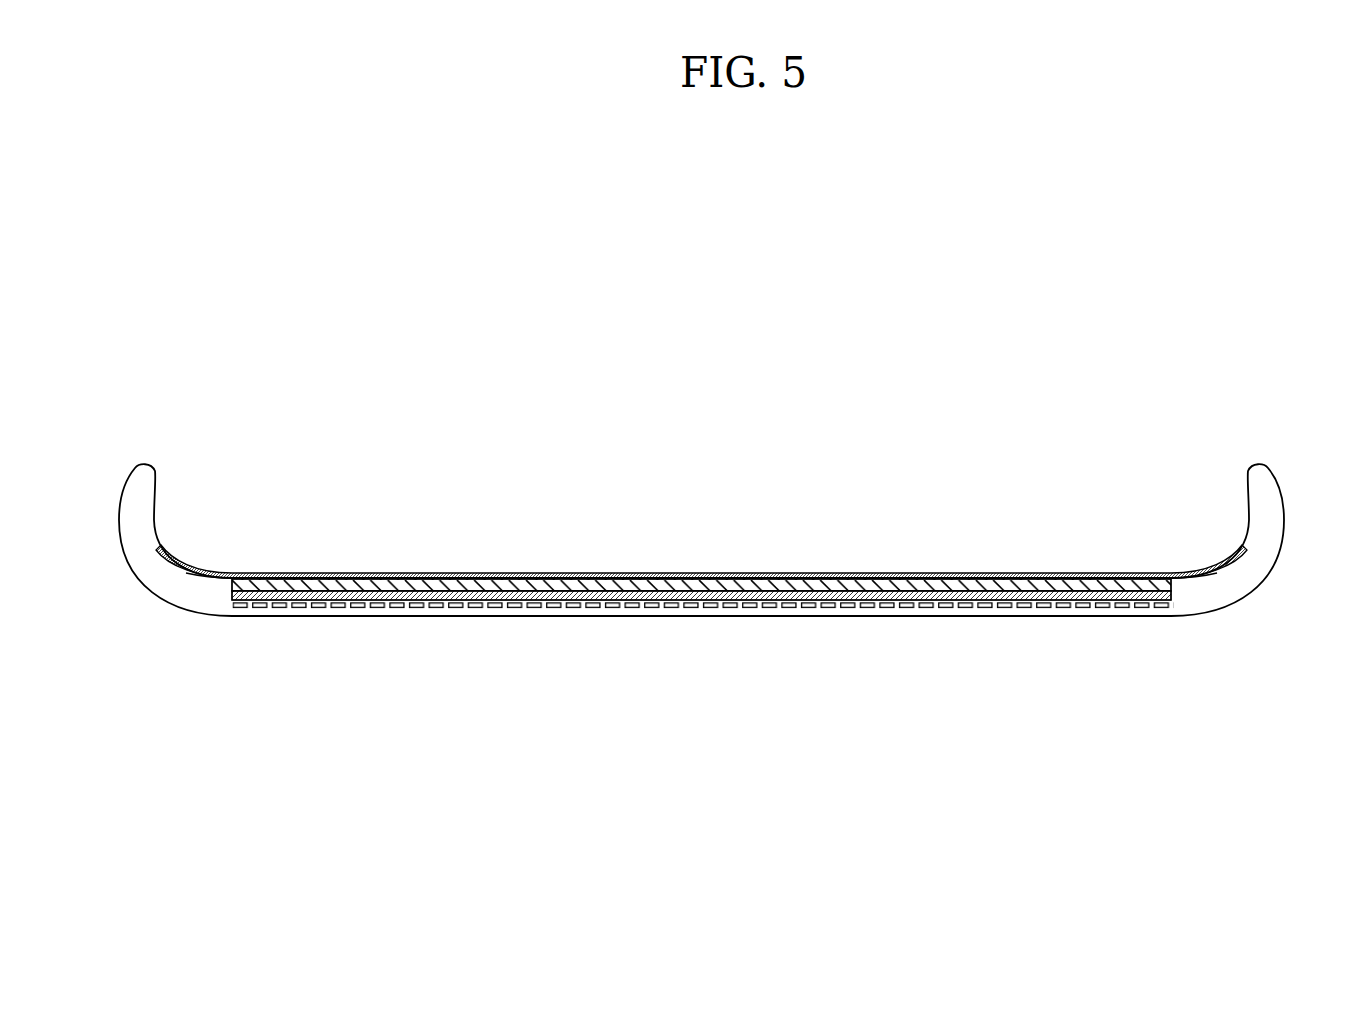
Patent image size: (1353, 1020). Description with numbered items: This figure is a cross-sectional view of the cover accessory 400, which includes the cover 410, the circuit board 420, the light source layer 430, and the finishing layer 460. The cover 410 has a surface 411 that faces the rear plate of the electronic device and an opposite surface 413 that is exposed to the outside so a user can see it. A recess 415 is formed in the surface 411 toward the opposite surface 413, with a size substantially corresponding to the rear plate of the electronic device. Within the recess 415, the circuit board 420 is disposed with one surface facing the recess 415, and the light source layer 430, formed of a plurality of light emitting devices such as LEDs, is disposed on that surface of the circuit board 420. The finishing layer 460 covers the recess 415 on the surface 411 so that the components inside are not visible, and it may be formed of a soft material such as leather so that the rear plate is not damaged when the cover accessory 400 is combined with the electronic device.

The cover accessory 400 is at (430, 410).
The cover 410 is at (1195, 600).
The surface of the cover 411 is at (1175, 577).
The opposite surface of the cover 413 is at (1040, 618).
The recess 415 is at (232, 596).
The circuit board 420 is at (383, 583).
The light source layer 430 is at (353, 598).
The finishing layer 460 is at (603, 577).